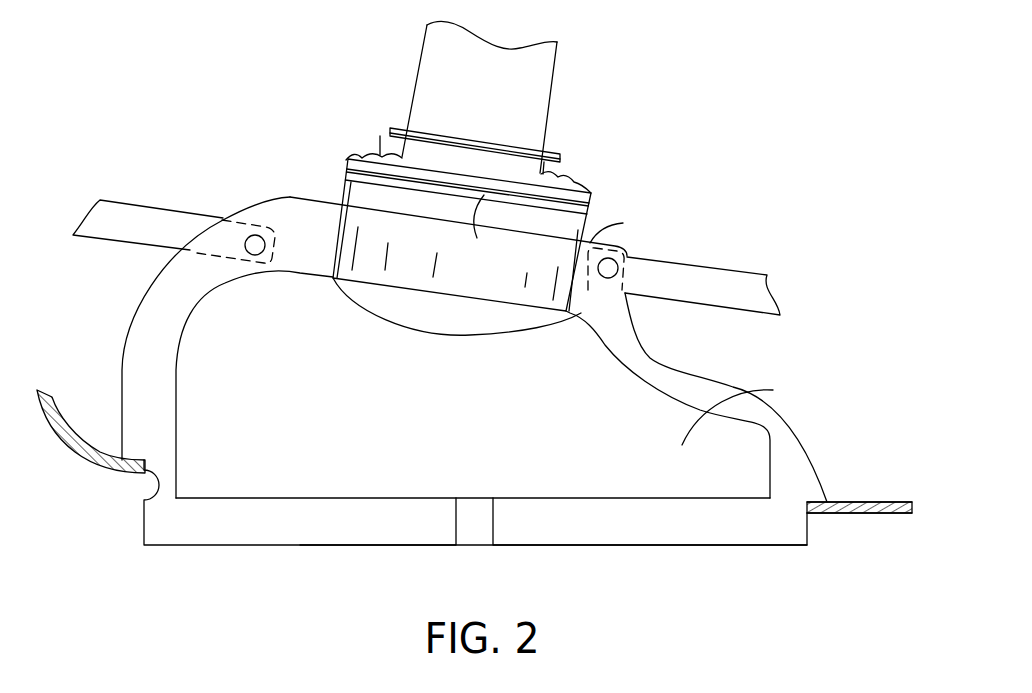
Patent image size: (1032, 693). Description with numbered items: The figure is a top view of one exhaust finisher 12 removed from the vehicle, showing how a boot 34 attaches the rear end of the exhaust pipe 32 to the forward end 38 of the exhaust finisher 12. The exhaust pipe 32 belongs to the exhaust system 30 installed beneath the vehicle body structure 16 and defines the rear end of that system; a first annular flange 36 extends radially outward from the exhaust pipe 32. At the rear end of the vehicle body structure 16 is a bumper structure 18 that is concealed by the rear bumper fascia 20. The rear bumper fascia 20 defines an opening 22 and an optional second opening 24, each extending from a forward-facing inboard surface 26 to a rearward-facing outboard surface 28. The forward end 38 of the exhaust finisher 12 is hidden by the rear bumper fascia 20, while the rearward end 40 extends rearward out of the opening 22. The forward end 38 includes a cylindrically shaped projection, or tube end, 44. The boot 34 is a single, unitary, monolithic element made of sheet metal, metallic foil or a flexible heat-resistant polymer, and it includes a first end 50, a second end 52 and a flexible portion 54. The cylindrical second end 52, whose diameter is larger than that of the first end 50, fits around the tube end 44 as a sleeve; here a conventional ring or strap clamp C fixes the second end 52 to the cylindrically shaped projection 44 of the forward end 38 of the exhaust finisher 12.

The exhaust finisher 12 is at (642, 332).
The vehicle body structure 16 is at (728, 287).
The bumper structure 18 is at (135, 222).
The rear bumper fascia 20 is at (893, 508).
The opening 22 is at (91, 454).
The second opening 24 is at (91, 431).
The inboard surface 26 is at (858, 503).
The outboard surface 28 is at (845, 513).
The exhaust system 30 is at (499, 97).
The exhaust pipe 32 is at (445, 58).
The boot 34 is at (487, 213).
The first annular flange 36 is at (543, 145).
The forward end 38 is at (697, 327).
The rearward end 40 is at (663, 545).
The cylindrically shaped projection 44 is at (317, 200).
The first end 50 is at (480, 142).
The second end 52 is at (358, 165).
The flexible portion 54 is at (383, 153).
The ring or strap clamp C is at (474, 229).